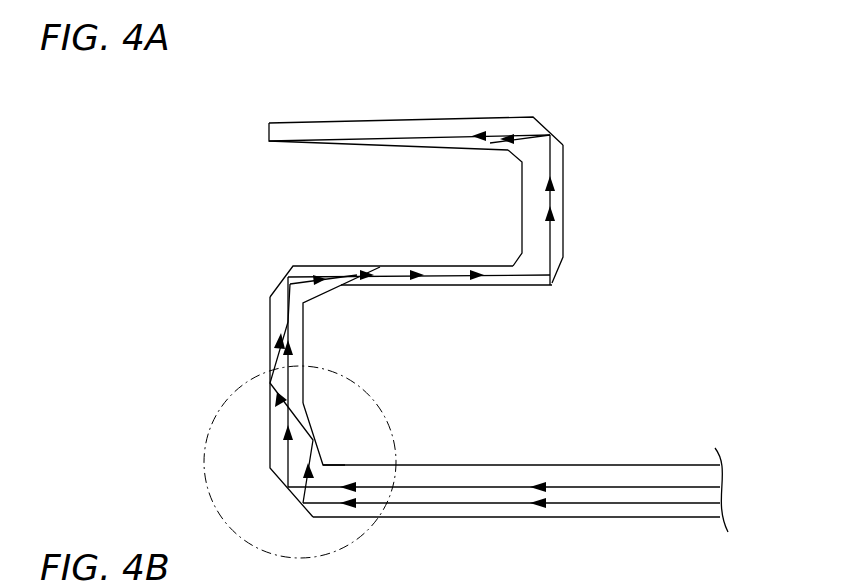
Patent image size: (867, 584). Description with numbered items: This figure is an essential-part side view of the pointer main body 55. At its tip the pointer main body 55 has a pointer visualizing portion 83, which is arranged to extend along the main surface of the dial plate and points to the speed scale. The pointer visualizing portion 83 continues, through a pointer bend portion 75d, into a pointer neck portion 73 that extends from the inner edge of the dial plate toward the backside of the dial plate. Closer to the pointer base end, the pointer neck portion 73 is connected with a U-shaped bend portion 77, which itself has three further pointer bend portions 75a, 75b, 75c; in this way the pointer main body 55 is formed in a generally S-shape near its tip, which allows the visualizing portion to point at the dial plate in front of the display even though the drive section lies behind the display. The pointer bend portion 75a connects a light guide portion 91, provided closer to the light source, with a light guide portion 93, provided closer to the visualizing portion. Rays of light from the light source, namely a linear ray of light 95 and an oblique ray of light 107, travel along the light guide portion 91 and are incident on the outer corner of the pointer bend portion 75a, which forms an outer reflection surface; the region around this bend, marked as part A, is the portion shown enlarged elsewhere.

The pointer main body 55 is at (620, 110).
The pointer visualizing portion 83 is at (393, 118).
The pointer neck portion 73 is at (566, 197).
The U-shaped bend portion 77 is at (388, 264).
The light guide portion 93 is at (268, 323).
The pointer bend portion 75a is at (347, 424).
The pointer bend portion 75b is at (340, 306).
The pointer bend portion 75c is at (504, 247).
The pointer bend portion 75d is at (506, 167).
The light guide portion 91 is at (670, 463).
The linear ray of light 95 is at (690, 480).
The oblique ray of light 107 is at (685, 505).
The part A is at (192, 442).